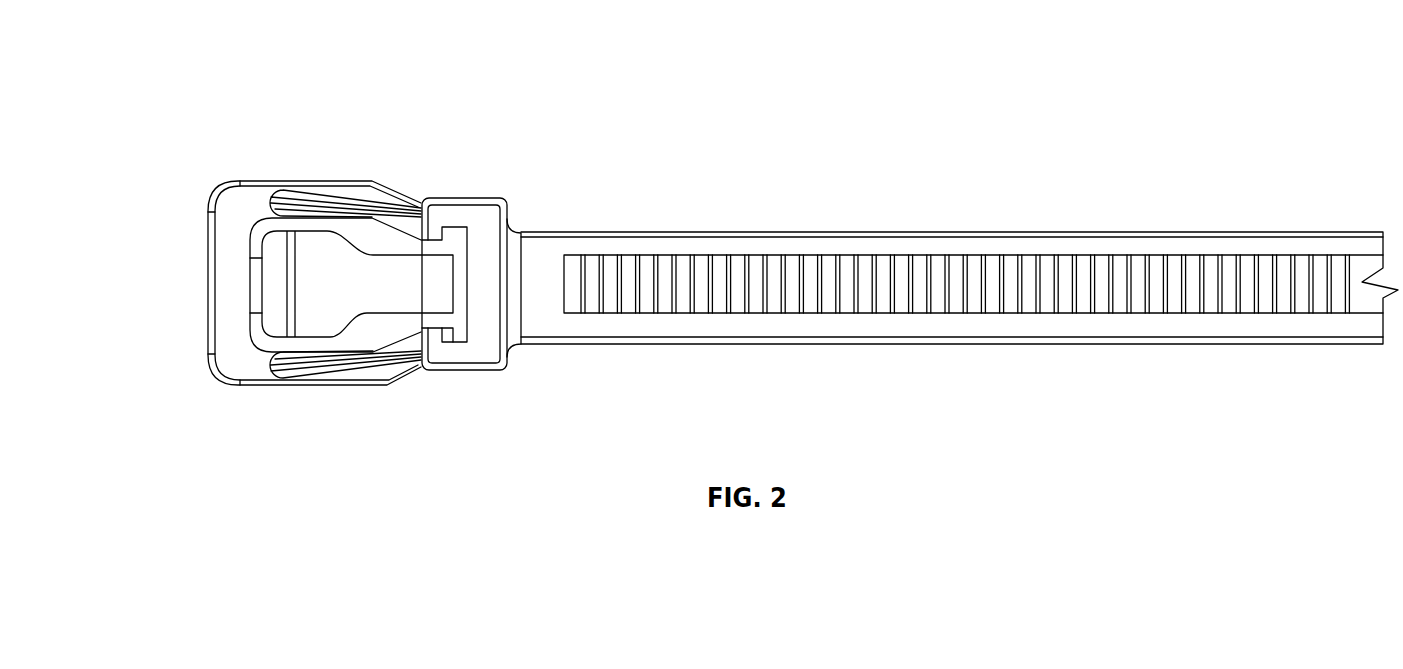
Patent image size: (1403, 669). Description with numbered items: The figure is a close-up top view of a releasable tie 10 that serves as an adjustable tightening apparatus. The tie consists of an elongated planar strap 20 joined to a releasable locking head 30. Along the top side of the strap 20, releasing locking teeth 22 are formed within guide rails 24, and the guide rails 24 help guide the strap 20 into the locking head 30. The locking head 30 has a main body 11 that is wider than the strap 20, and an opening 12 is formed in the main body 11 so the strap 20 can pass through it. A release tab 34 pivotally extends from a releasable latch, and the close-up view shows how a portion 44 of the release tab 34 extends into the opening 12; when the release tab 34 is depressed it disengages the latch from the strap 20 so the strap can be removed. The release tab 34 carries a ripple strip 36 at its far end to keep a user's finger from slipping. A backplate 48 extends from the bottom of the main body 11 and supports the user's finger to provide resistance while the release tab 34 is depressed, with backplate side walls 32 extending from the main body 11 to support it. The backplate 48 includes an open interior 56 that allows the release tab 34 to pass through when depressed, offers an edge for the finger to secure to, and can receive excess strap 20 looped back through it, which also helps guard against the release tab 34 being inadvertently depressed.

The releasable tie 10 is at (468, 52).
The main body 11 is at (487, 232).
The opening 12 is at (450, 337).
The strap 20 is at (880, 195).
The releasing locking teeth 22 is at (1152, 305).
The guide rails 24 is at (1087, 245).
The releasable locking head 30 is at (166, 296).
The backplate side walls 32 is at (313, 263).
The release tab 34 is at (368, 212).
The ripple strip 36 is at (278, 288).
The portion of the release tab 44 is at (445, 268).
The backplate 48 is at (225, 190).
The open interior 56 is at (225, 250).